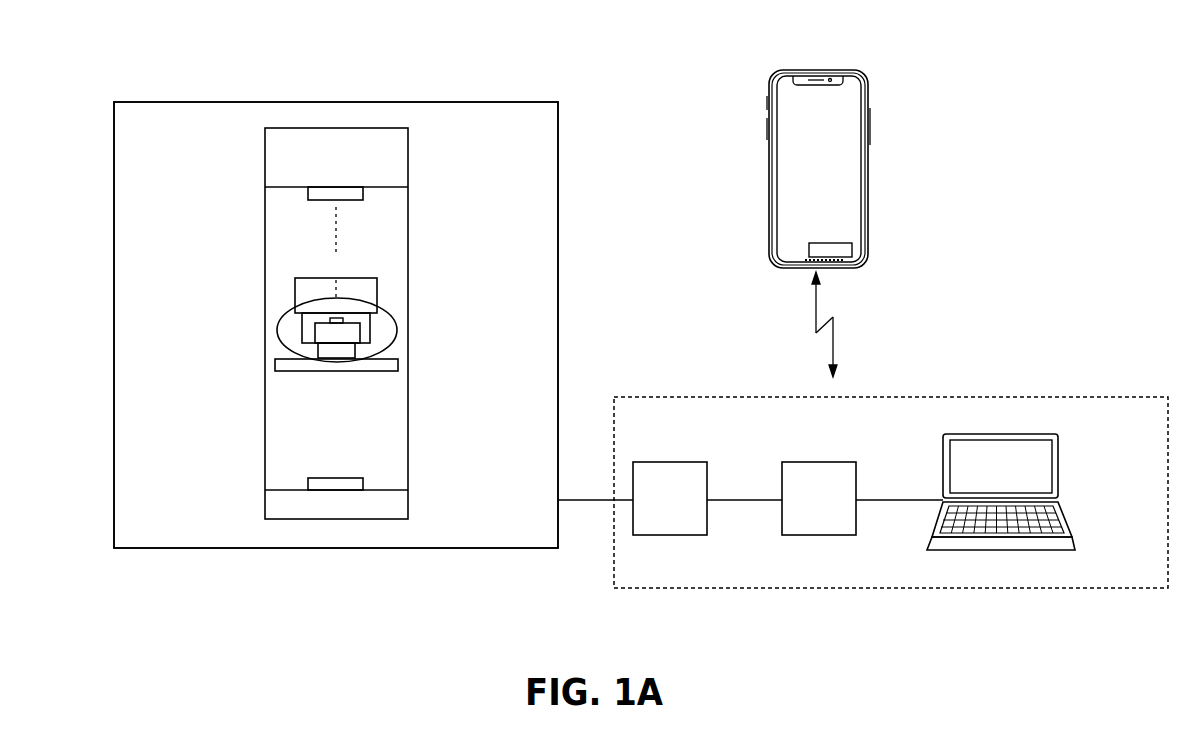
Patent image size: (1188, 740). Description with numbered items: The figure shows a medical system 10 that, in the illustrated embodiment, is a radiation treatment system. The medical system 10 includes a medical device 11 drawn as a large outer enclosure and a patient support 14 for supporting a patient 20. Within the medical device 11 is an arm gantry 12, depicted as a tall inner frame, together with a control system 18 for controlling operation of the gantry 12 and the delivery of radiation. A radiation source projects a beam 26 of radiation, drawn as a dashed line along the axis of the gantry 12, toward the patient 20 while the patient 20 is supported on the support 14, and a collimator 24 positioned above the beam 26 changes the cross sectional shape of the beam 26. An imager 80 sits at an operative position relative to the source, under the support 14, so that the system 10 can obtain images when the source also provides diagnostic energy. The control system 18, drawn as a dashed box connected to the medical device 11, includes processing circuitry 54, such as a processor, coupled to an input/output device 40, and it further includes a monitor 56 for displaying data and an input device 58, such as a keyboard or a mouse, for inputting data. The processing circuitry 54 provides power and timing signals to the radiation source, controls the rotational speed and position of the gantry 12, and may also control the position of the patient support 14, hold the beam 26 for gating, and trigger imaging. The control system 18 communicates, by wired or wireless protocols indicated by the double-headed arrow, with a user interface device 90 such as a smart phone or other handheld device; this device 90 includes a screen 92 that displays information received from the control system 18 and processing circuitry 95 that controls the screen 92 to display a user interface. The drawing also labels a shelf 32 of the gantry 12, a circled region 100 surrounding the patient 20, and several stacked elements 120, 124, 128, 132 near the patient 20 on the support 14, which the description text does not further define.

The medical system 10 is at (613, 54).
The medical device 11 is at (114, 466).
The arm gantry 12 is at (408, 230).
The patient support 14 is at (398, 371).
The control system 18 is at (775, 397).
The patient 20 is at (277, 333).
The collimator 24 is at (308, 195).
The beam 26 is at (334, 221).
The shelf 32 is at (408, 190).
The input/output device 40 is at (682, 508).
The processing circuitry 54 is at (831, 508).
The monitor 56 is at (1058, 460).
The input device 58 is at (1072, 535).
The imager 80 is at (330, 477).
The user interface device 90 is at (870, 140).
The screen 92 is at (836, 99).
The processing circuitry 95 is at (836, 250).
The sensor region 100 is at (402, 353).
The probe 120 is at (334, 320).
The carrier 124 is at (371, 322).
The head 128 is at (295, 291).
The base 132 is at (318, 350).